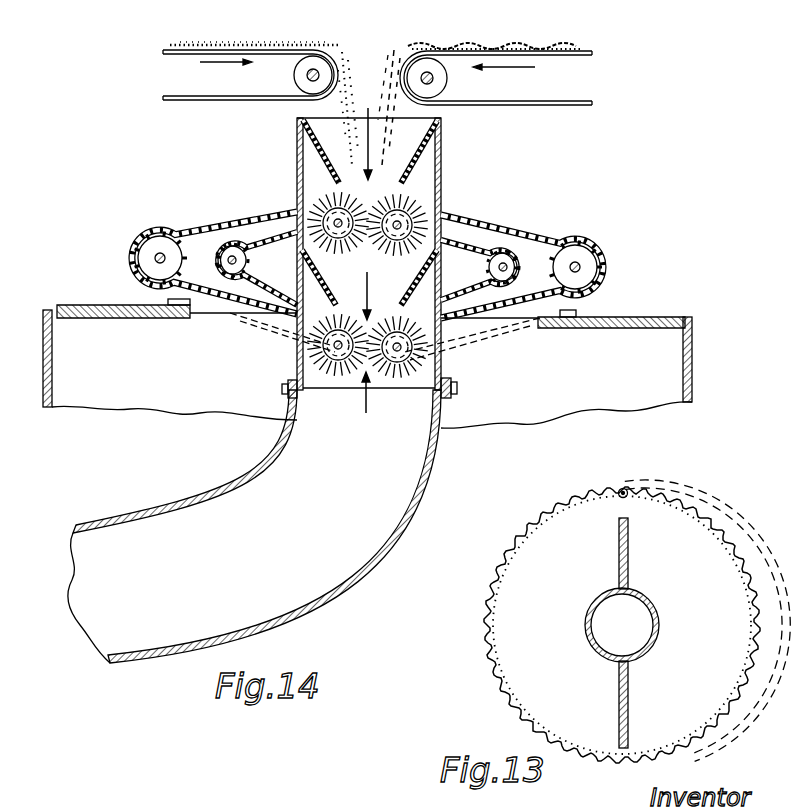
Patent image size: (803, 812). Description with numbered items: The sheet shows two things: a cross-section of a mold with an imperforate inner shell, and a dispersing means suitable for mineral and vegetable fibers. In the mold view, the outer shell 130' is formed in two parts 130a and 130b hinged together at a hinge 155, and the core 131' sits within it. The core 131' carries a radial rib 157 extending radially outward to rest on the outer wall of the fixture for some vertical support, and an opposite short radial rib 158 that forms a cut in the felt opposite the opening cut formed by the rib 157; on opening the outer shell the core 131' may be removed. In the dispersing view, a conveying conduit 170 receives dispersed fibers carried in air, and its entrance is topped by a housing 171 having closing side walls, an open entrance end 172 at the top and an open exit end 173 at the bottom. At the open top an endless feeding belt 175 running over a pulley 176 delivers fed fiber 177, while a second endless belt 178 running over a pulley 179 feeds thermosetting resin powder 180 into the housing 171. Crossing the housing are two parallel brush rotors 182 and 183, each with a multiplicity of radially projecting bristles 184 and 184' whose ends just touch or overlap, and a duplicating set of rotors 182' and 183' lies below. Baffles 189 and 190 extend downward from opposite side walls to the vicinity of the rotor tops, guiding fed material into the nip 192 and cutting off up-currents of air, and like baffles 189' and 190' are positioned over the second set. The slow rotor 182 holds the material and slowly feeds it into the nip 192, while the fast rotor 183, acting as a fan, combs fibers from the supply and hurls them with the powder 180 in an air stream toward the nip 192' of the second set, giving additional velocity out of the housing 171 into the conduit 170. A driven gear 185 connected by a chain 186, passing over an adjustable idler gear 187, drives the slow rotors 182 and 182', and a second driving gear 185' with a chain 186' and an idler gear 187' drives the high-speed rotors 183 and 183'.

In FIG. 14, the endless belt 178 is at (176, 92).
In FIG. 14, the pulley 179 is at (296, 80).
In FIG. 14, the endless feeding belt 175 is at (584, 98).
In FIG. 14, the pulley 176 is at (448, 82).
In FIG. 14, the thermosetting resin powder 180 is at (344, 68).
In FIG. 14, the fed fiber 177 is at (392, 62).
In FIG. 14, the housing 171 is at (444, 159).
In FIG. 14, the open entrance end 172 is at (297, 118).
In FIG. 14, the baffle 189 is at (288, 151).
In FIG. 14, the baffle 190 is at (445, 152).
In FIG. 14, the baffle 189' is at (295, 277).
In FIG. 14, the baffle 190' is at (442, 277).
In FIG. 14, the brush rotor 182 is at (338, 235).
In FIG. 14, the brush rotor 183 is at (428, 223).
In FIG. 14, the brush rotor 182' is at (304, 345).
In FIG. 14, the brush rotor 183' is at (436, 347).
In FIG. 14, the bristles 184 is at (286, 183).
In FIG. 14, the bristles 184' is at (449, 190).
In FIG. 14, the nip 192 is at (371, 132).
In FIG. 14, the nip 192' is at (388, 292).
In FIG. 14, the open exit end 173 is at (366, 402).
In FIG. 14, the chain 186 is at (214, 252).
In FIG. 14, the driven gear 185 is at (161, 242).
In FIG. 14, the adjustable idler gear 187 is at (241, 268).
In FIG. 14, the chain 186' is at (522, 257).
In FIG. 14, the driving gear 185' is at (594, 253).
In FIG. 14, the idler gear 187' is at (489, 273).
In FIG. 14, the conveying conduit 170 is at (253, 478).
In FIG. 13, the outer shell 130' is at (622, 610).
In FIG. 13, the outer shell part 130a is at (736, 512).
In FIG. 13, the outer shell part 130b is at (518, 714).
In FIG. 13, the core 131' is at (645, 622).
In FIG. 13, the short radial rib 158 is at (619, 550).
In FIG. 13, the radial rib 157 is at (628, 706).
In FIG. 13, the hinge 155 is at (625, 488).